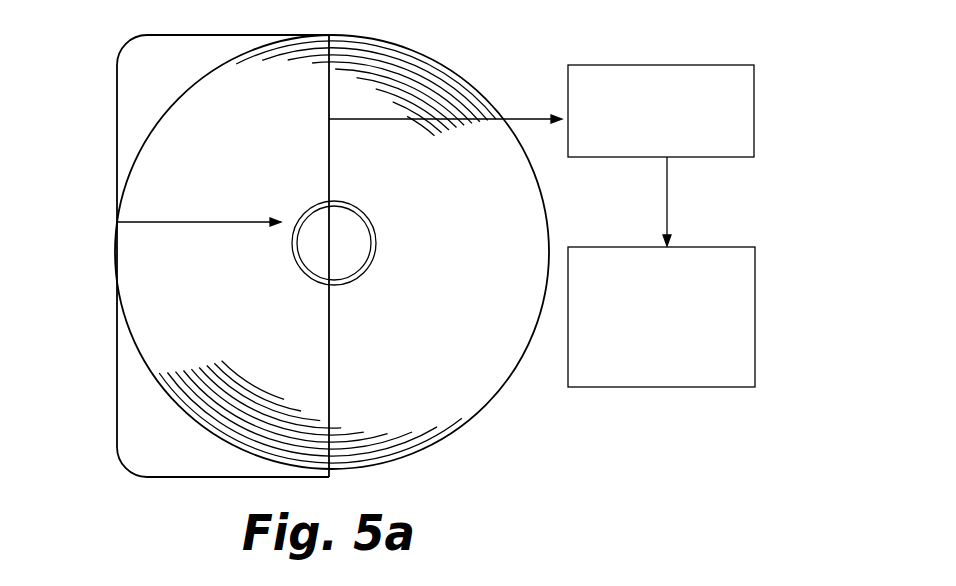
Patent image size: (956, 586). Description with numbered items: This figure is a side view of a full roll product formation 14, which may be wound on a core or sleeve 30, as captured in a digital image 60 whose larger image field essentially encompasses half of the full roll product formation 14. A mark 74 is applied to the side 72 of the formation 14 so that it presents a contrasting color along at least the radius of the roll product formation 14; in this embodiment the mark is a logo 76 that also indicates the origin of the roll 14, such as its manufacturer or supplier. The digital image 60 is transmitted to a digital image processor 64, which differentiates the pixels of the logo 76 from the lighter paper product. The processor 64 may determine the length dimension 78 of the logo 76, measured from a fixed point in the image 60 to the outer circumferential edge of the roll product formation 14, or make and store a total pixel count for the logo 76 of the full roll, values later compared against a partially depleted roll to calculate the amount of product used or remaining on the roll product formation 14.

The roll product formation 14 is at (425, 56).
The core or sleeve 30 is at (372, 266).
The digital image 60 is at (117, 121).
The digital image processor 64 is at (643, 64).
The side of the paper product formation 72 is at (391, 375).
The mark 74 is at (176, 262).
The logo 76 is at (258, 258).
The logo length arrow 78 is at (250, 221).